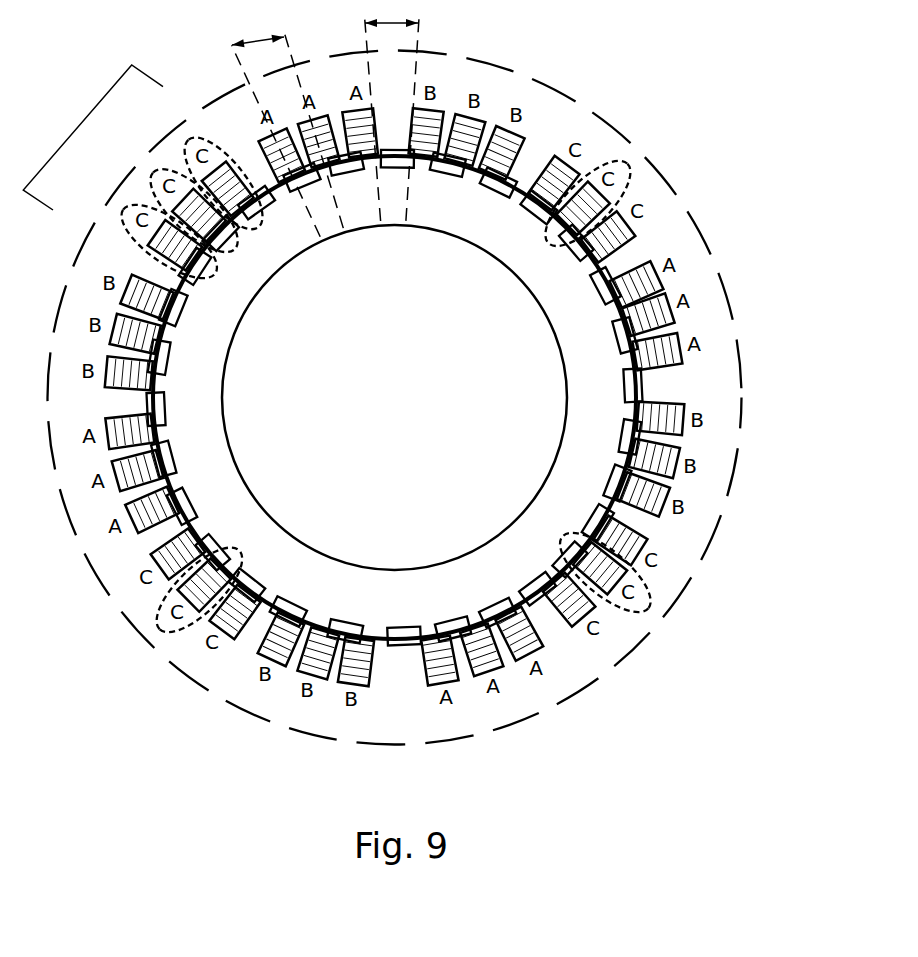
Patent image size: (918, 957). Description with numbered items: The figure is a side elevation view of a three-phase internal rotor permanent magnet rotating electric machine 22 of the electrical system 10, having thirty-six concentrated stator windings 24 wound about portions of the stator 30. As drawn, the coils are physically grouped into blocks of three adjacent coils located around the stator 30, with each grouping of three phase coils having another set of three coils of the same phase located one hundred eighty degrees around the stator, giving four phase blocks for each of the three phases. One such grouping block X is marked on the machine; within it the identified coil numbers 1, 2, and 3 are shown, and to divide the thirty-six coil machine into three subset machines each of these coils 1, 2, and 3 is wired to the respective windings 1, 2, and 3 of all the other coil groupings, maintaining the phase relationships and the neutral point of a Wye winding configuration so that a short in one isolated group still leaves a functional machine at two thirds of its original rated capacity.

The electrical system 10 is at (190, 45).
The electric machine 22 is at (607, 272).
The concentrated stator windings 24 is at (524, 138).
The stator 30 is at (640, 385).
The coil number 1 is at (190, 140).
The coil number 2 is at (153, 172).
The coil number 3 is at (121, 211).
The grouping block X is at (78, 125).